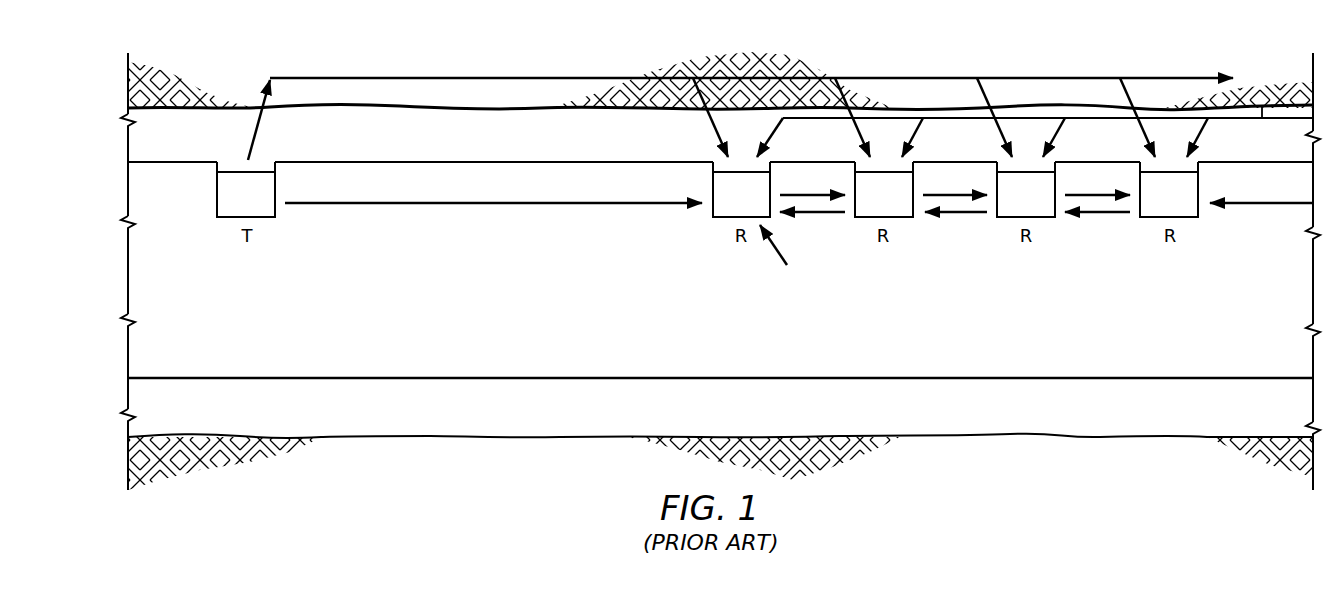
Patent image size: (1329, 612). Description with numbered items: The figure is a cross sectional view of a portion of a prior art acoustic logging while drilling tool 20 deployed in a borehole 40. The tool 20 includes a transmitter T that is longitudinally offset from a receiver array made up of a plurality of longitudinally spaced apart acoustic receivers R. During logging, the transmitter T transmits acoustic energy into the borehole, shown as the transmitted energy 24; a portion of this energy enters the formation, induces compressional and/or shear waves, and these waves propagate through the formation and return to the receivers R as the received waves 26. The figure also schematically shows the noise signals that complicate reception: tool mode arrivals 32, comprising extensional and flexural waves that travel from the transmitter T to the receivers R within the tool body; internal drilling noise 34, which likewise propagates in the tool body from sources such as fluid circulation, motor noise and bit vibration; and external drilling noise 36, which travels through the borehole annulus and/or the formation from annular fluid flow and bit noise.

The acoustic logging while drilling tool 20 is at (745, 378).
The transmitted acoustic energy 24 is at (248, 146).
The received compressional and shear waves 26 is at (707, 121).
The tool mode arrivals 32 is at (486, 206).
The internal drilling noise 34 is at (972, 212).
The external drilling noise 36 is at (1261, 101).
The borehole 40 is at (425, 444).